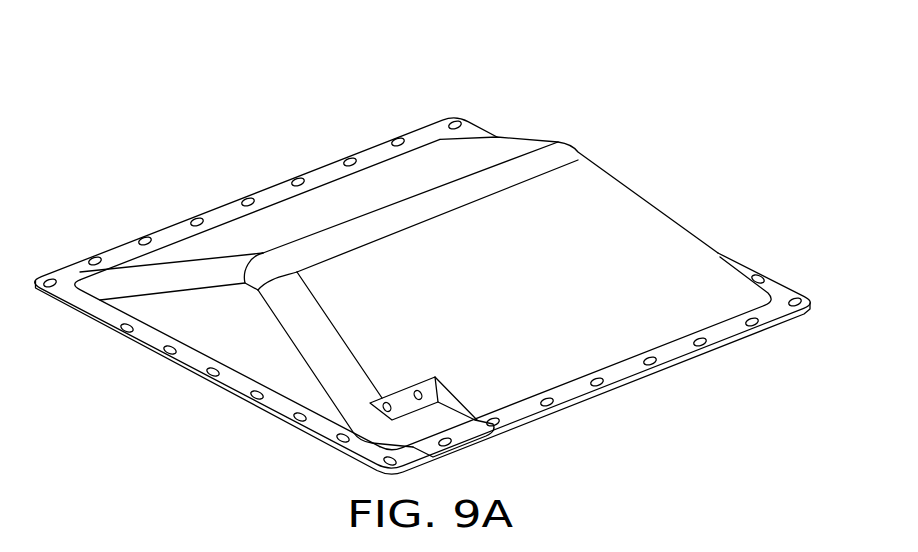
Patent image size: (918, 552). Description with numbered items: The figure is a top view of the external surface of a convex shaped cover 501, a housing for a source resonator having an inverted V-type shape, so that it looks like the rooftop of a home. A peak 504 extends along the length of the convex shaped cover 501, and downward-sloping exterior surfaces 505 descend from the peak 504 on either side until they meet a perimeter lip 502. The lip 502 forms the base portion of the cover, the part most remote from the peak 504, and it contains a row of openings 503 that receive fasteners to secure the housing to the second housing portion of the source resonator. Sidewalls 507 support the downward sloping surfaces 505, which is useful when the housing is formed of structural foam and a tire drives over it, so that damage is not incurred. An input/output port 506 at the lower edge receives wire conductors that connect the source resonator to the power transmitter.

The convex shaped cover 501 is at (718, 98).
The perimeter lip 502 is at (737, 262).
The openings 503 is at (651, 357).
The peak 504 is at (560, 147).
The downward-sloping exterior surfaces 505 is at (440, 147).
The input/output port 506 is at (472, 450).
The sidewalls 507 is at (203, 322).